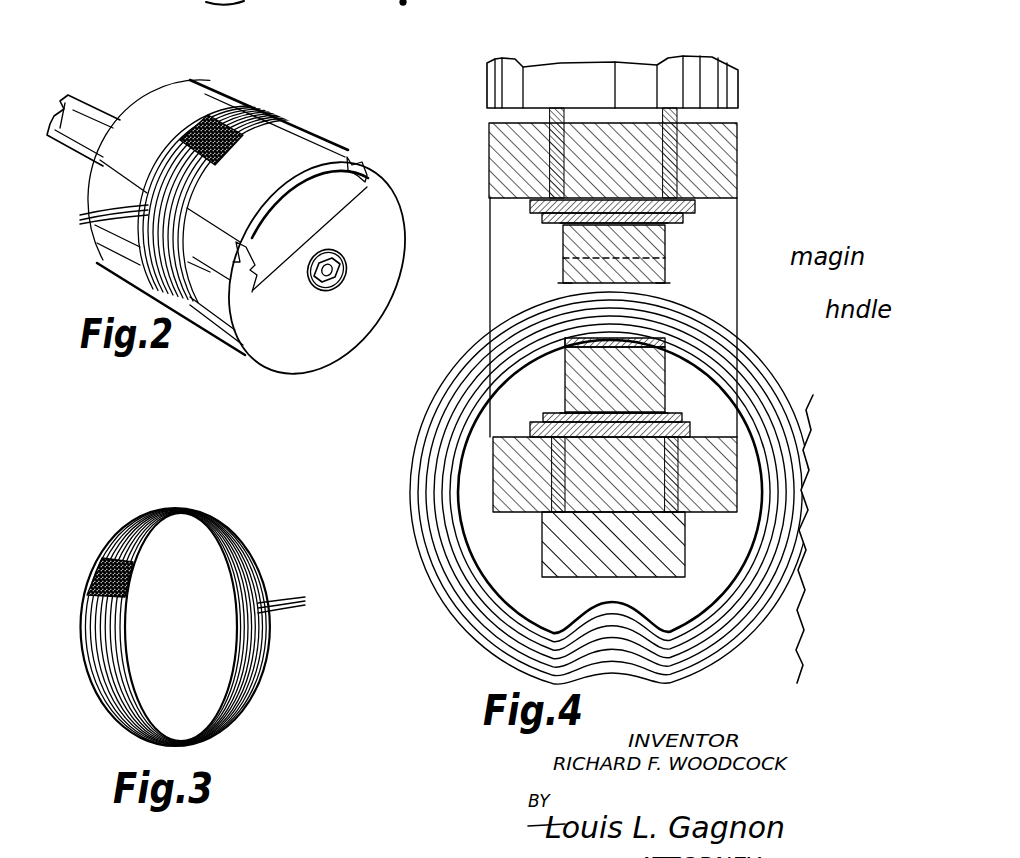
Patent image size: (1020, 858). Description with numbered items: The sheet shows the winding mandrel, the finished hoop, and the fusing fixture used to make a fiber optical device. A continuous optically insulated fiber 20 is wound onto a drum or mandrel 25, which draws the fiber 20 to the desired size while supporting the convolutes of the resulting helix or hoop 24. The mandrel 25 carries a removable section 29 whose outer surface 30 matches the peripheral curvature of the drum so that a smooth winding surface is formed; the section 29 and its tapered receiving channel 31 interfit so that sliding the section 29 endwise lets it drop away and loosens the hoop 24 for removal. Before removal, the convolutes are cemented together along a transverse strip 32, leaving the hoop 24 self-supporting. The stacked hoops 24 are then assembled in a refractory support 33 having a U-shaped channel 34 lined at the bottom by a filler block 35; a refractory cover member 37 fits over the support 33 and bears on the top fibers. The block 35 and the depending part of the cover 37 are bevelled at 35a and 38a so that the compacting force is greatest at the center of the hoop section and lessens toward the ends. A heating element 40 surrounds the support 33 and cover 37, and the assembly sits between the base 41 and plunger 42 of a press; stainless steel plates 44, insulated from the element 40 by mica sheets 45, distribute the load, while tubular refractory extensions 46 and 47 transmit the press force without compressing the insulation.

In FIG. 2, the fiber 20 is at (102, 216).
In FIG. 3, the fiber 20 is at (295, 601).
In FIG. 2, the helix or hoop 24 is at (262, 103).
In FIG. 3, the helix or hoop 24 is at (243, 532).
In FIG. 4, the helix or hoop 24 is at (743, 605).
In FIG. 2, the mandrel 25 is at (317, 378).
In FIG. 2, the removable section 29 is at (333, 190).
In FIG. 2, the outer surface 30 is at (310, 147).
In FIG. 2, the receiving channel 31 is at (232, 262).
In FIG. 2, the transverse section or strip 32 is at (197, 114).
In FIG. 3, the transverse section or strip 32 is at (100, 568).
In FIG. 4, the support 33 is at (662, 406).
In FIG. 4, the channel 34 is at (633, 347).
In FIG. 4, the filler or block 35 is at (647, 342).
In FIG. 4, the bevel 35a is at (567, 340).
In FIG. 4, the cover member 37 is at (645, 263).
In FIG. 4, the bevel 38a is at (570, 283).
In FIG. 4, the heating element 40 is at (570, 222).
In FIG. 4, the base 41 is at (683, 550).
In FIG. 4, the plunger 42 is at (733, 73).
In FIG. 4, the stainless steel plates 44 is at (697, 203).
In FIG. 4, the sheets of mica 45 is at (683, 218).
In FIG. 4, the tubular extension 46 is at (675, 498).
In FIG. 4, the tubular extension 47 is at (672, 142).